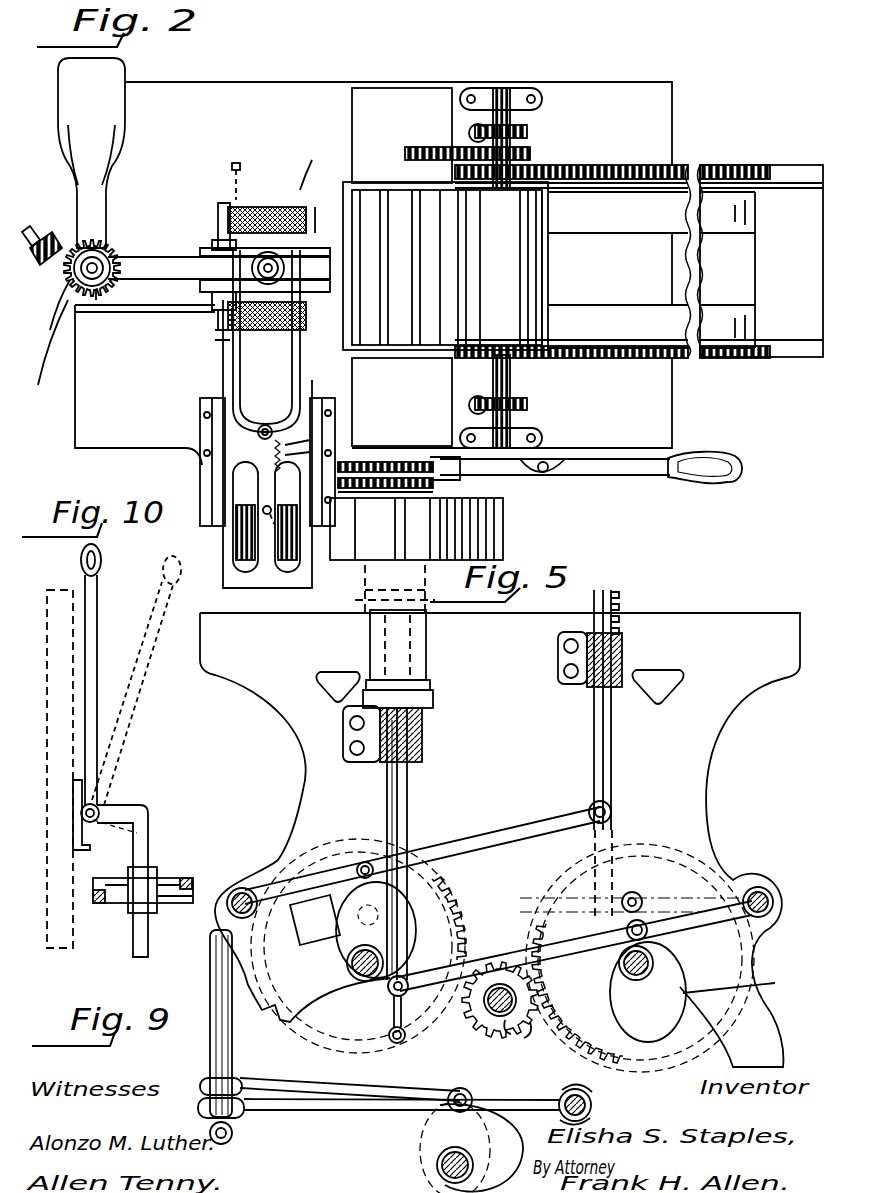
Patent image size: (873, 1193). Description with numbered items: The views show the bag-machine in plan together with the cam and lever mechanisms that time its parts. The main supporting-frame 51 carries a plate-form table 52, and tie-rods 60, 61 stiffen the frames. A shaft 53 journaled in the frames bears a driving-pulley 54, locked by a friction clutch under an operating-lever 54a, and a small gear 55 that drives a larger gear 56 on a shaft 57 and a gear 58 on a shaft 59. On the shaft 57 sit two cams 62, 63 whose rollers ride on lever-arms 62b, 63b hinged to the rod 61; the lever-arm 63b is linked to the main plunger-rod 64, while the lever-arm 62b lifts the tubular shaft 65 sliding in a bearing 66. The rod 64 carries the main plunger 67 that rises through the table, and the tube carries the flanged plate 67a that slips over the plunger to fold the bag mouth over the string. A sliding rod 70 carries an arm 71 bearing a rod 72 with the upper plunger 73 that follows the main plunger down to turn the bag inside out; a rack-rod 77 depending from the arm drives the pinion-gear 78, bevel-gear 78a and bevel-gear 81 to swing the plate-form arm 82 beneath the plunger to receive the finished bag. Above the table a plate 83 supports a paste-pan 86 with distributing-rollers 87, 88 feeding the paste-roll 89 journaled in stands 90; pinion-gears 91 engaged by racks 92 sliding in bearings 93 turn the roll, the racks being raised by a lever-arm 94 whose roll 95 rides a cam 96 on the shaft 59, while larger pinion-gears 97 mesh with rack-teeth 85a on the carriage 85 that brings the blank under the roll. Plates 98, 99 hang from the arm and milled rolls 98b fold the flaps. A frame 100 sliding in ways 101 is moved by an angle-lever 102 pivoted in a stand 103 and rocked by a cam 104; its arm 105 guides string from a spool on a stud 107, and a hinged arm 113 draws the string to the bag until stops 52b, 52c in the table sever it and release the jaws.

In FIG. 5, the main supporting-frame 51 is at (500, 840).
In FIG. 2, the table 52 is at (373, 273).
In FIG. 2, the stop 52b is at (237, 160).
In FIG. 2, the stop 52c is at (313, 158).
In FIG. 5, the shaft 53 is at (494, 1012).
In FIG. 2, the driving-pulley 54 is at (416, 537).
In FIG. 2, the operating-lever 54a is at (652, 470).
In FIG. 5, the small gear 55 is at (522, 1038).
In FIG. 5, the larger gear 56 is at (637, 958).
In FIG. 5, the shaft 57 is at (650, 963).
In FIG. 9, the shaft 57 is at (440, 1164).
In FIG. 5, the gear 58 is at (440, 892).
In FIG. 5, the shaft 59 is at (366, 980).
In FIG. 5, the rod 60 is at (236, 890).
In FIG. 5, the rod 61 is at (766, 893).
In FIG. 9, the rod 61 is at (593, 1103).
In FIG. 5, the cam 62 is at (648, 967).
In FIG. 9, the cam 62 is at (471, 1147).
In FIG. 5, the lever-arm 62b is at (525, 958).
In FIG. 9, the lever-arm 62b is at (402, 1112).
In FIG. 5, the cam 63 is at (745, 985).
In FIG. 9, the lever-arm 63b is at (297, 1088).
In FIG. 5, the main plunger-rod 64 is at (390, 1034).
In FIG. 9, the main plunger-rod 64 is at (233, 1130).
In FIG. 5, the tubular shaft 65 is at (405, 812).
In FIG. 9, the tubular shaft 65 is at (214, 978).
In FIG. 5, the bearing 66 is at (420, 740).
In FIG. 5, the main plunger 67 is at (398, 650).
In FIG. 5, the flanged plate 67a is at (432, 698).
In FIG. 2, the rod 70 is at (108, 252).
In FIG. 2, the arm 71 is at (219, 268).
In FIG. 2, the rod 72 is at (216, 320).
In FIG. 2, the upper plunger 73 is at (214, 226).
In FIG. 2, the rack-rod 77 is at (42, 270).
In FIG. 2, the pinion-gear 78 is at (47, 309).
In FIG. 2, the bevel-gear 78a is at (49, 342).
In FIG. 2, the bevel-gear 81 is at (96, 295).
In FIG. 2, the arm 82 is at (91, 153).
In FIG. 2, the plate 83 is at (402, 267).
In FIG. 2, the carriage 85 is at (685, 261).
In FIG. 2, the rack-teeth 85a is at (745, 150).
In FIG. 2, the paste-pan 86 is at (445, 266).
In FIG. 2, the distributing-roller 87 is at (396, 267).
In FIG. 2, the distributing-roller 88 is at (443, 267).
In FIG. 2, the paste-roll 89 is at (511, 267).
In FIG. 2, the stand 90 is at (502, 92).
In FIG. 2, the pinion-gear 91 is at (528, 130).
In FIG. 2, the rack 92 is at (472, 124).
In FIG. 5, the rack 92 is at (612, 612).
In FIG. 5, the bearing 93 is at (592, 690).
In FIG. 5, the lever-arm 94 is at (497, 835).
In FIG. 5, the roll 95 is at (366, 860).
In FIG. 5, the cam 96 is at (353, 930).
In FIG. 2, the pinion-gear 97 is at (520, 165).
In FIG. 2, the plate 98 is at (222, 336).
In FIG. 2, the milled roll 98b is at (272, 212).
In FIG. 2, the plate 99 is at (322, 212).
In FIG. 2, the frame 100 is at (267, 484).
In FIG. 2, the ways 101 is at (212, 470).
In FIG. 10, the angle-lever 102 is at (95, 640).
In FIG. 10, the stand 103 is at (86, 835).
In FIG. 10, the cam 104 is at (140, 923).
In FIG. 2, the arm 105 is at (224, 374).
In FIG. 2, the stud 107 is at (263, 512).
In FIG. 2, the arm 113 is at (300, 376).